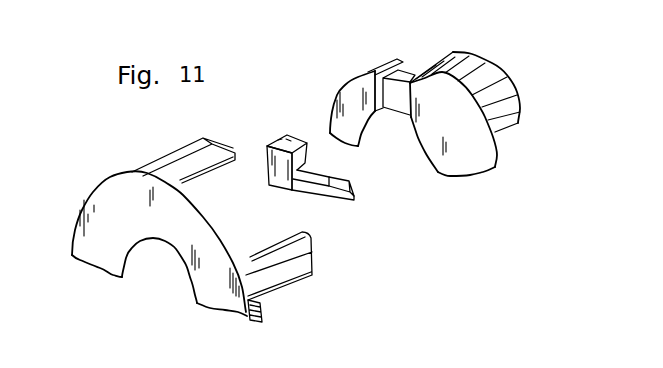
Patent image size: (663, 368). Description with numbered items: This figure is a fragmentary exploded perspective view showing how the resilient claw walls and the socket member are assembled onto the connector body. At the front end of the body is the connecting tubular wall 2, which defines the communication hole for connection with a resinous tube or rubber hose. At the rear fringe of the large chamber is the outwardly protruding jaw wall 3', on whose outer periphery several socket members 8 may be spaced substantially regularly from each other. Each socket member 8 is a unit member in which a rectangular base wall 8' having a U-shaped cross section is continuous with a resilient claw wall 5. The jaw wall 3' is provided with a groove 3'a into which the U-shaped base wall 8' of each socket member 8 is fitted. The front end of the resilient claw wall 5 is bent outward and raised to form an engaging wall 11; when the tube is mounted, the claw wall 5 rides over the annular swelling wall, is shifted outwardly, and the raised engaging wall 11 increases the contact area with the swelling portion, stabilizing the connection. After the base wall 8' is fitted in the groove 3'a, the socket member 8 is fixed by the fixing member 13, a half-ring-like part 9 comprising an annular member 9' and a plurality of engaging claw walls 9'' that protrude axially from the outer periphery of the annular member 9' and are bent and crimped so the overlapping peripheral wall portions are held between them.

The connecting tubular wall 2 is at (463, 68).
The jaw wall 3' is at (429, 112).
The groove 3'a is at (406, 64).
The resilient claw wall 5 is at (334, 201).
The socket member 8 is at (297, 125).
The base wall 8' is at (264, 145).
The half ring member 9 is at (159, 243).
The annular member 9' is at (222, 335).
The engaging claw walls 9'' is at (285, 278).
The engaging wall 11 is at (354, 177).
The fixing member 13 is at (117, 197).